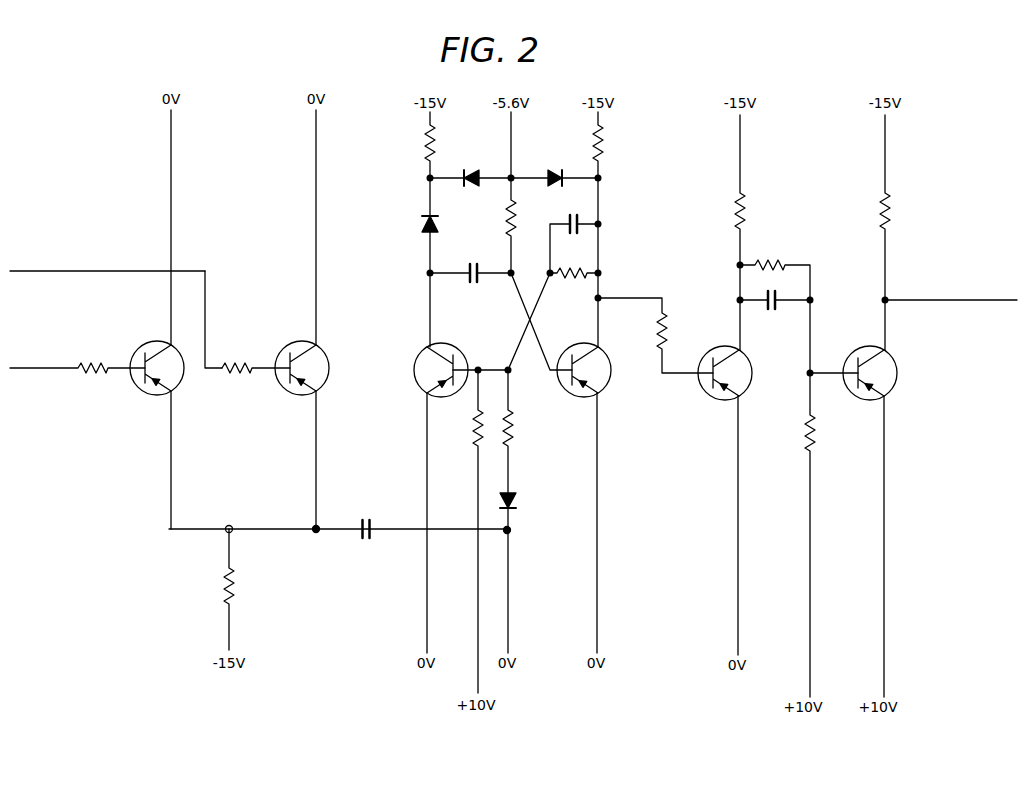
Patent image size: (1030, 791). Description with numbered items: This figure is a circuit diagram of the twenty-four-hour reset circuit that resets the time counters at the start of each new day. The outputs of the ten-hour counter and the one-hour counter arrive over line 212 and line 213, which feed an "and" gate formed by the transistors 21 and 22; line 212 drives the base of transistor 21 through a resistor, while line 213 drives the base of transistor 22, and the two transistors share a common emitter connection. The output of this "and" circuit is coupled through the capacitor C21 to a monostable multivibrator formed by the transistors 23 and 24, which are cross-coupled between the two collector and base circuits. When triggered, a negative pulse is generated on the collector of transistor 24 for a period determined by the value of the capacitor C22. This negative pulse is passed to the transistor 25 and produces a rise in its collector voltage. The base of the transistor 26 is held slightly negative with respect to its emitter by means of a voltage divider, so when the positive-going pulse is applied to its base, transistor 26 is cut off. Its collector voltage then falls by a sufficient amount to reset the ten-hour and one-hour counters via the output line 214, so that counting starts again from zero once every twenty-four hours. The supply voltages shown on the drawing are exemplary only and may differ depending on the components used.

The transistor 21 is at (145, 343).
The transistor 22 is at (289, 344).
The transistor 23 is at (419, 349).
The transistor 24 is at (581, 345).
The transistor 25 is at (721, 350).
The transistor 26 is at (864, 350).
The line 212 is at (51, 366).
The line 213 is at (53, 270).
The line 214 is at (987, 300).
The capacitor C21 is at (373, 520).
The capacitor C22 is at (474, 262).